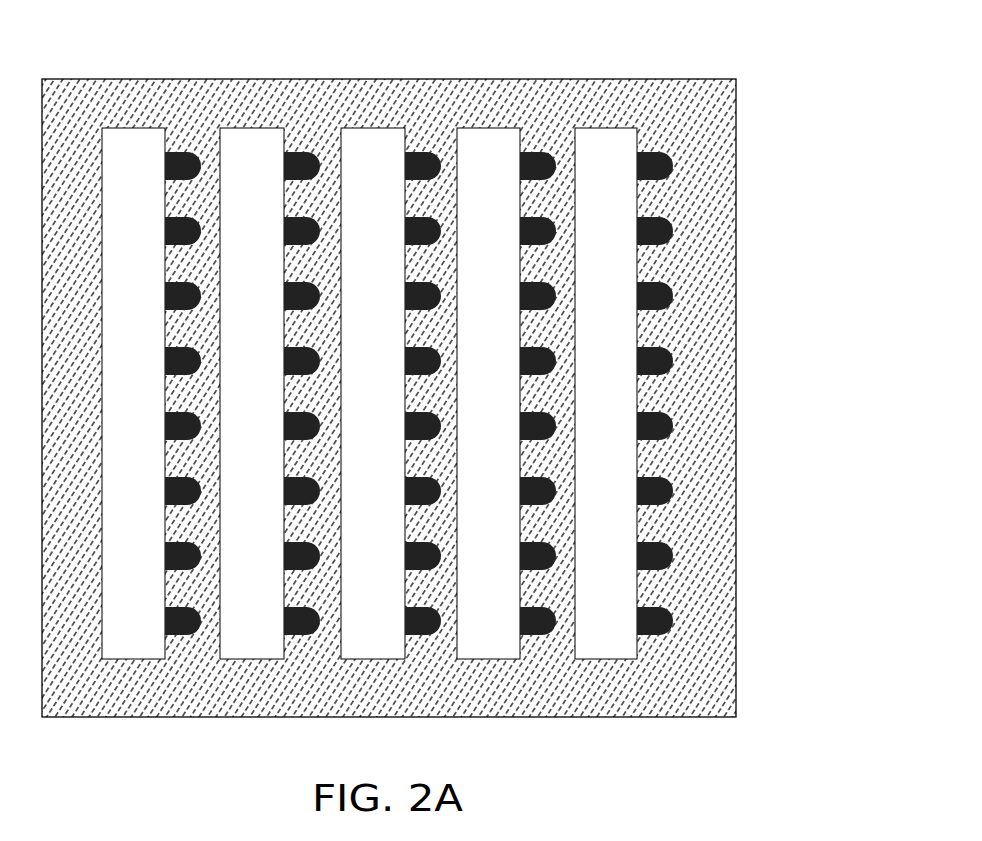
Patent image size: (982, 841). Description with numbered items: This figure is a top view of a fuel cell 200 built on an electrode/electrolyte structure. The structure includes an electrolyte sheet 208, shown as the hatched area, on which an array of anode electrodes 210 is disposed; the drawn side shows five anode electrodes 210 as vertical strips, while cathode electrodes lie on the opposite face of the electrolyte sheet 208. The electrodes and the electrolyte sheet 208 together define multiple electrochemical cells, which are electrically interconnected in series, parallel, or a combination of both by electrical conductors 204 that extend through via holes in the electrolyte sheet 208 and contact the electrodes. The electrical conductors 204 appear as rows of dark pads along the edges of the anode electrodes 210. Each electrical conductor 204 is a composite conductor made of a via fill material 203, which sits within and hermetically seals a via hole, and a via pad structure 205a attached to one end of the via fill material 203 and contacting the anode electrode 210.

The fuel cell 200 is at (408, 392).
The electrolyte sheet 208 is at (389, 414).
The anode electrodes 210 is at (353, 127).
The electrical conductors 204 is at (420, 653).
The via fill material 203 is at (538, 640).
The via pad structure 205a is at (535, 641).